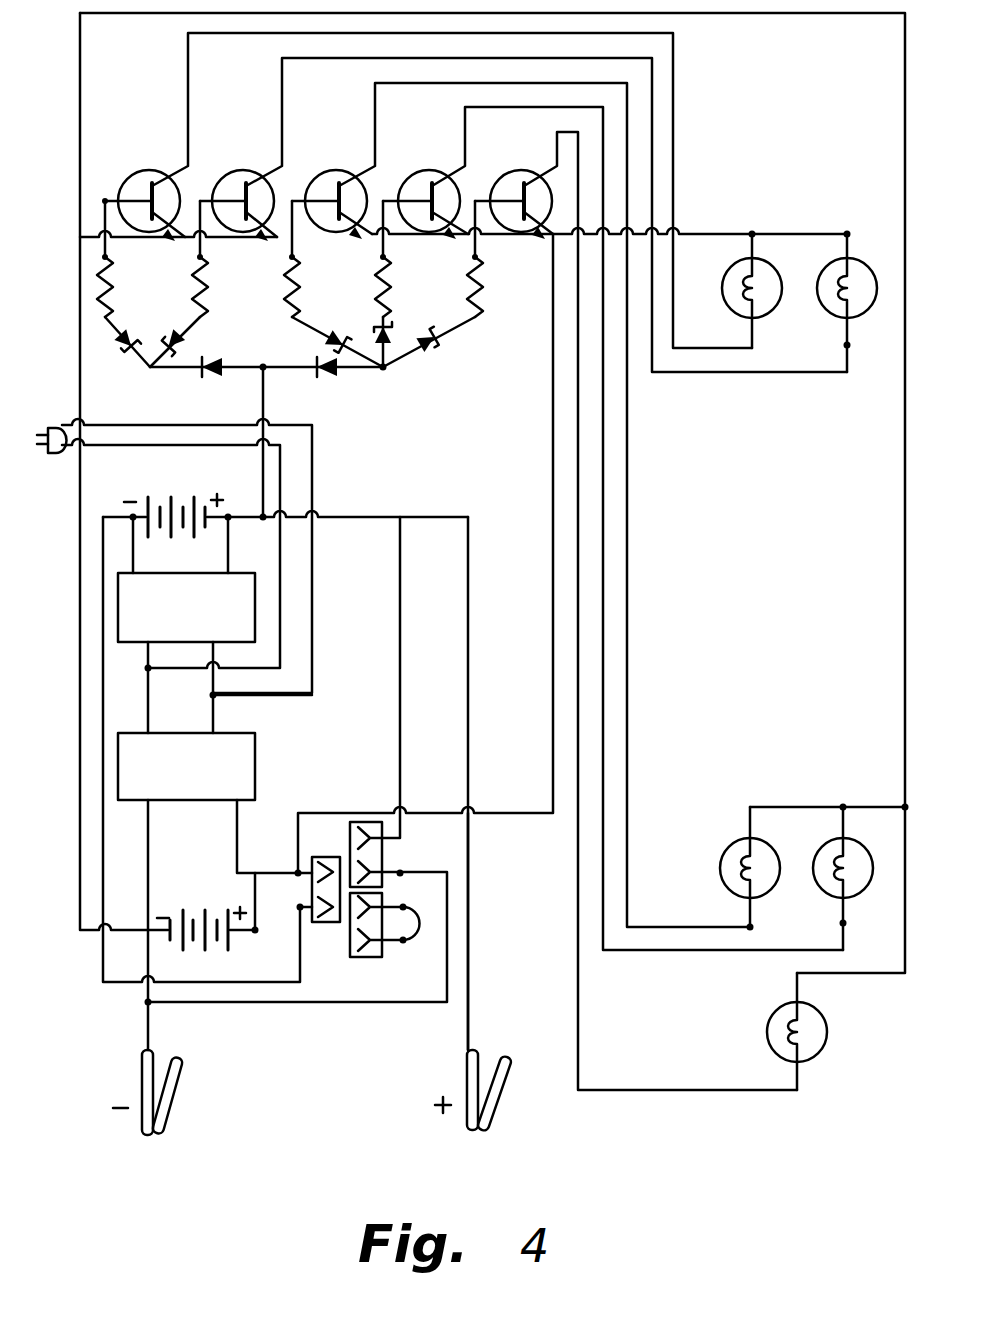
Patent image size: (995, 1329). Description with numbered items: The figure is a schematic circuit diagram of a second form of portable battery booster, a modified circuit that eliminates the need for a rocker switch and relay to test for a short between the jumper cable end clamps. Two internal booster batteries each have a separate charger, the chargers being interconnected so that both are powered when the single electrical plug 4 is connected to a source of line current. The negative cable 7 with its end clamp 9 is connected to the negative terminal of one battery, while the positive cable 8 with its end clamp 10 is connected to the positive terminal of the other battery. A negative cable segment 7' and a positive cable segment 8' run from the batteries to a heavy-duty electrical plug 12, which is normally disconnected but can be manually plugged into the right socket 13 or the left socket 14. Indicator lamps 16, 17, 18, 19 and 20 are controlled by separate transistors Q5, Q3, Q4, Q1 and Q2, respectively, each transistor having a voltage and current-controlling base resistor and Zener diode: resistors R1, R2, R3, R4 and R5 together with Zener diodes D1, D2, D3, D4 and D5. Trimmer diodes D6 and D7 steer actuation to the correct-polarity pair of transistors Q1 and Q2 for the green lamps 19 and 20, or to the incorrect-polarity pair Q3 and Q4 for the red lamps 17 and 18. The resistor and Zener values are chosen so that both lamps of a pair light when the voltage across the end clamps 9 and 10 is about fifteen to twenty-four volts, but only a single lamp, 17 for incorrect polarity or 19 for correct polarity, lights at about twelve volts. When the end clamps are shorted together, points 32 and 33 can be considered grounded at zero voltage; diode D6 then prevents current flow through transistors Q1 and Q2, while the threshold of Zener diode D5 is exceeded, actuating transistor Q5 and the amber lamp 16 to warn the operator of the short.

The electrical plug 4 is at (63, 455).
The negative cable 7 is at (176, 925).
The negative cable segment 7' is at (254, 927).
The positive cable 8 is at (489, 931).
The positive cable segment 8' is at (274, 838).
The end clamp 9 is at (160, 1108).
The end clamp 10 is at (488, 1124).
The heavy-duty electrical plug 12 is at (300, 888).
The right socket 13 is at (373, 853).
The left socket 14 is at (373, 925).
The amber lamp 16 is at (812, 1053).
The red lamp 17 is at (857, 888).
The red lamp 18 is at (759, 901).
The green lamp 19 is at (859, 322).
The green lamp 20 is at (764, 320).
The point 32 is at (262, 522).
The point 33 is at (268, 372).
The transistor Q1 is at (238, 199).
The transistor Q2 is at (143, 199).
The transistor Q3 is at (425, 199).
The transistor Q4 is at (332, 199).
The transistor Q5 is at (514, 199).
The base resistor R1 is at (215, 285).
The base resistor R2 is at (122, 285).
The base resistor R3 is at (401, 285).
The base resistor R4 is at (308, 285).
The base resistor R5 is at (492, 285).
The Zener diode D1 is at (188, 342).
The Zener diode D2 is at (130, 335).
The Zener diode D3 is at (399, 335).
The Zener diode D4 is at (337, 332).
The Zener diode D5 is at (429, 347).
The trimmer diode D6 is at (218, 381).
The trimmer diode D7 is at (334, 381).